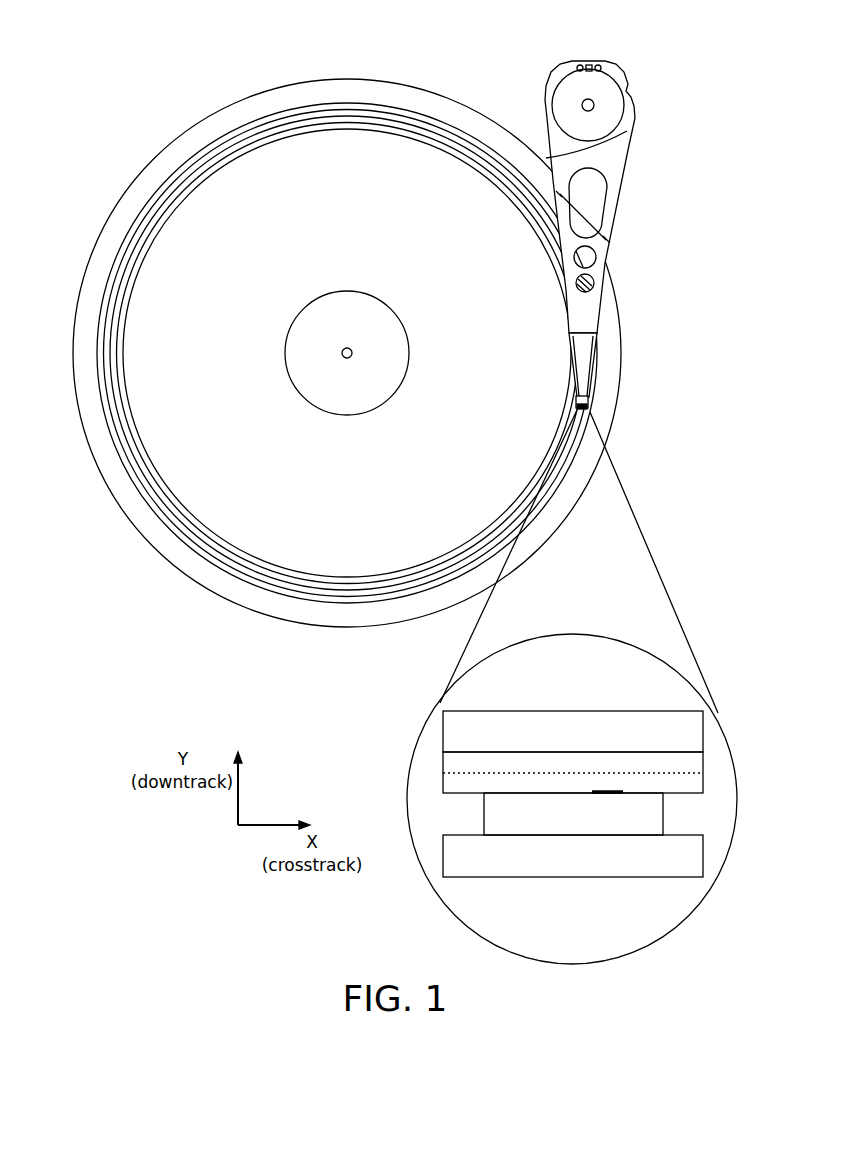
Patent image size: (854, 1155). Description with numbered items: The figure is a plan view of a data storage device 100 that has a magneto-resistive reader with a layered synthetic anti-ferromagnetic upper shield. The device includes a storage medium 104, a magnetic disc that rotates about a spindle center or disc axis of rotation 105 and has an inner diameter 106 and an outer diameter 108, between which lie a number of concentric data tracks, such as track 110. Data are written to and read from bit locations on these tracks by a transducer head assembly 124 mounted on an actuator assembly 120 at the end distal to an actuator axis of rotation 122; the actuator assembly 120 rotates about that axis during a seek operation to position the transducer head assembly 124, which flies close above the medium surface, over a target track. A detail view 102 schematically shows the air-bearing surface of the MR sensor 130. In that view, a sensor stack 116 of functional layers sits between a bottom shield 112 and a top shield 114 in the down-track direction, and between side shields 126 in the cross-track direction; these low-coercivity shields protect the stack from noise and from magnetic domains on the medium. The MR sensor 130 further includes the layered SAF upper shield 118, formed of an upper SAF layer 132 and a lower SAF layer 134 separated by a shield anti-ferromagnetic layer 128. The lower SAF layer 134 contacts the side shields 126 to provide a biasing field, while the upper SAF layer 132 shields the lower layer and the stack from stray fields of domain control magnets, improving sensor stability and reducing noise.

The data storage device 100 is at (128, 74).
The detail view 102 is at (640, 642).
The storage medium 104 is at (405, 79).
The spindle center or disc axis of rotation 105 is at (347, 353).
The inner diameter 106 is at (347, 353).
The outer diameter 108 is at (247, 122).
The track 110 is at (455, 547).
The bottom shield 112 is at (558, 866).
The top shield 114 is at (558, 741).
The sensor stack 116 is at (558, 822).
The layered SAF upper shield 118 is at (435, 746).
The actuator assembly 120 is at (639, 173).
The actuator axis of rotation 122 is at (592, 104).
The transducer head assembly 124 is at (598, 414).
The side shields 126 is at (437, 822).
The shield anti-ferromagnetic (AFM) layer 128 is at (443, 773).
The MR sensor 130 is at (564, 684).
The upper SAF layer 132 is at (525, 772).
The lower SAF layer 134 is at (608, 783).